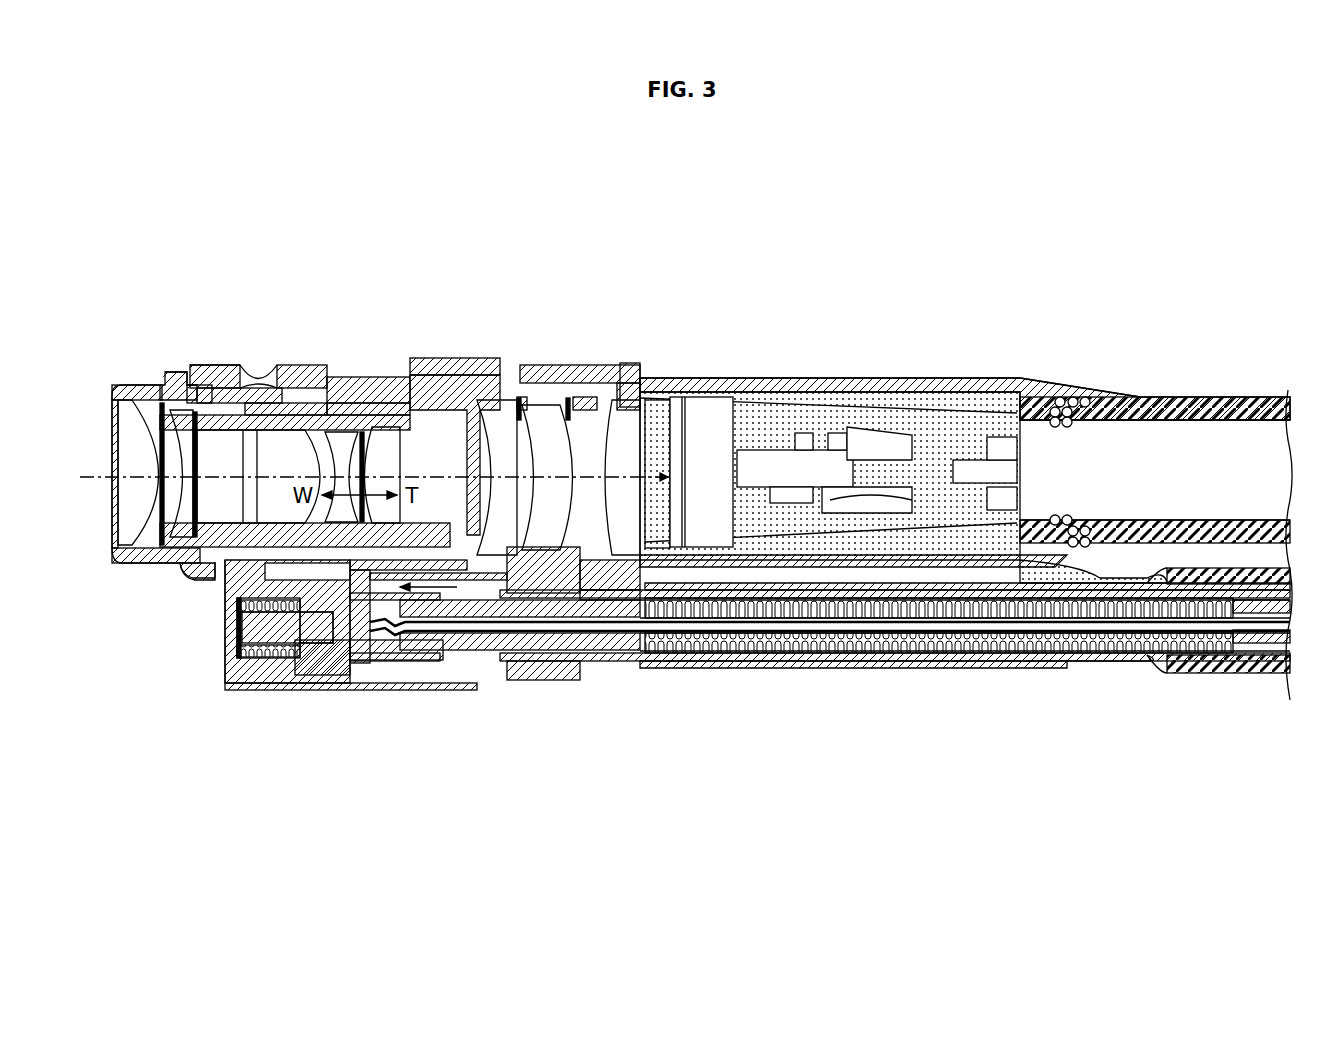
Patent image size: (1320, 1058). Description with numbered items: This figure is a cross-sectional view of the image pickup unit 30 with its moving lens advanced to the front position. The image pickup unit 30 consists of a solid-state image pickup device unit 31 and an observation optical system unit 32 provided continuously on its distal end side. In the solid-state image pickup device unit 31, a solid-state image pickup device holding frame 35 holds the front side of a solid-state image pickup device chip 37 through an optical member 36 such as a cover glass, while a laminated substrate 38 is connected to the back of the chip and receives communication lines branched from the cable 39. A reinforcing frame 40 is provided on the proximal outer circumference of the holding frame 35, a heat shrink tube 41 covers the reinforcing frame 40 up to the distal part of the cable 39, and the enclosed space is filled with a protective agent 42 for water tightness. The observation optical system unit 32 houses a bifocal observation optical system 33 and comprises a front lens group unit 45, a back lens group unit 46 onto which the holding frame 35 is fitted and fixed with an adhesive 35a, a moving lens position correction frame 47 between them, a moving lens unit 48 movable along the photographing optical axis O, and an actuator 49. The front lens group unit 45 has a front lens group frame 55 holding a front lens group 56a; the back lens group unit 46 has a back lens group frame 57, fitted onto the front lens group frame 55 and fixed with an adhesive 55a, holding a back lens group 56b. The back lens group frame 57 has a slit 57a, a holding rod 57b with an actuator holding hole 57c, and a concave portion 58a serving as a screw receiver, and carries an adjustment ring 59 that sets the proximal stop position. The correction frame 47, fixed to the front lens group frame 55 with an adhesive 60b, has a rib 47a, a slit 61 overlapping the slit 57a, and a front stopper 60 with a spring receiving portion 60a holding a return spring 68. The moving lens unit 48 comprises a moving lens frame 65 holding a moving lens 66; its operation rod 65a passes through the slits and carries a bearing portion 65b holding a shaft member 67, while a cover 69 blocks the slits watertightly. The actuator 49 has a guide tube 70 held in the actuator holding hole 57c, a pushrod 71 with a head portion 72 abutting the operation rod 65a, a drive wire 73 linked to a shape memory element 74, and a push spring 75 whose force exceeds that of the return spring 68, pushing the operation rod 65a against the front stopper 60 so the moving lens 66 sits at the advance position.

The image pickup unit 30 is at (681, 292).
The solid-state image pickup device unit 31 is at (817, 340).
The observation optical system unit 32 is at (322, 352).
The bifocal observation optical system 33 is at (110, 446).
The solid-state image pickup device holding frame 35 is at (590, 372).
The adhesive 35a is at (514, 408).
The optical member 36 is at (650, 410).
The solid-state image pickup device chip 37 is at (686, 420).
The laminated substrate 38 is at (770, 455).
The cable 39 is at (1155, 432).
The reinforcing frame 40 is at (915, 390).
The heat shrink tube 41 is at (962, 377).
The protective agent 42 is at (845, 410).
The front lens group unit 45 is at (131, 382).
The back lens group unit 46 is at (457, 360).
The moving lens position correction frame 47 is at (345, 380).
The rib 47a is at (252, 413).
The moving lens unit 48 is at (369, 385).
The actuator 49 is at (687, 675).
The front lens group frame 55 is at (172, 380).
The adhesive 55a is at (190, 378).
The front lens group 56a is at (262, 452).
The back lens group 56b is at (540, 455).
The back lens group frame 57 is at (218, 372).
The slit 57a is at (360, 662).
The holding rod 57b is at (575, 686).
The actuator holding hole 57c is at (562, 680).
The concave portion 58a is at (276, 372).
The adjustment ring 59 is at (498, 652).
The front stopper 60 is at (232, 672).
The spring receiving portion 60a is at (227, 643).
The adhesive 60b is at (213, 580).
The slit 61 is at (400, 662).
The moving lens frame 65 is at (387, 430).
The operation rod 65a is at (316, 675).
The bearing portion 65b is at (300, 662).
The moving lens 66 is at (392, 446).
The shaft member 67 is at (268, 662).
The return spring 68 is at (257, 662).
The cover 69 is at (250, 662).
The guide tube 70 is at (712, 662).
The pushrod 71 is at (625, 662).
The head portion 72 is at (430, 690).
The drive wire 73 is at (785, 662).
The shape memory element 74 is at (1272, 673).
The push spring 75 is at (742, 662).
The photographing optical axis O is at (96, 488).